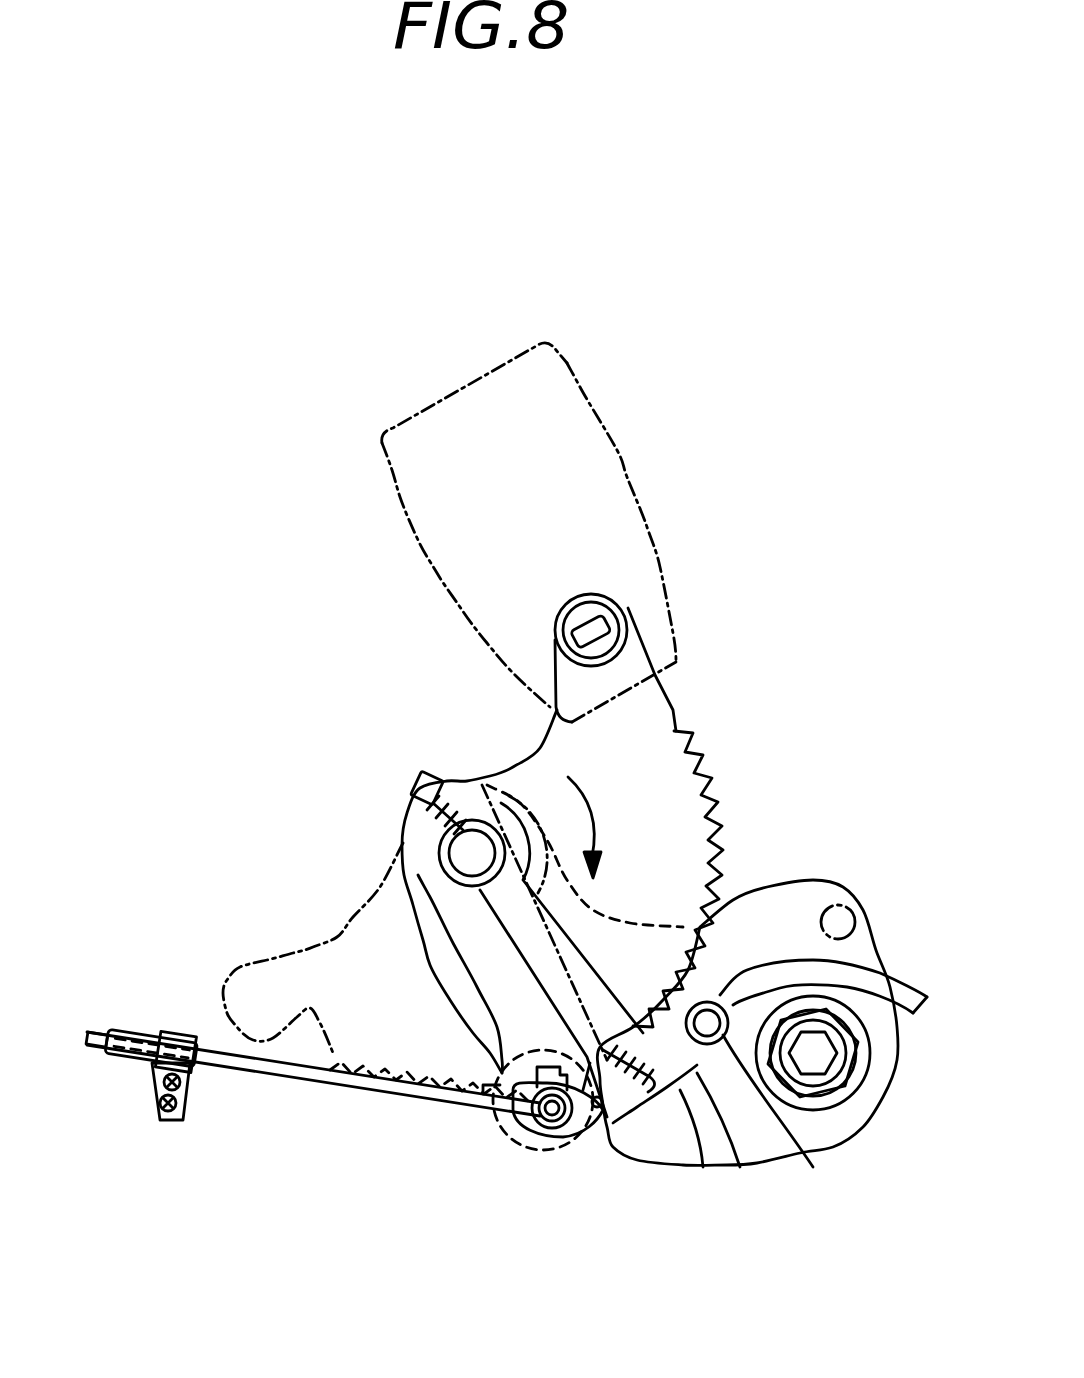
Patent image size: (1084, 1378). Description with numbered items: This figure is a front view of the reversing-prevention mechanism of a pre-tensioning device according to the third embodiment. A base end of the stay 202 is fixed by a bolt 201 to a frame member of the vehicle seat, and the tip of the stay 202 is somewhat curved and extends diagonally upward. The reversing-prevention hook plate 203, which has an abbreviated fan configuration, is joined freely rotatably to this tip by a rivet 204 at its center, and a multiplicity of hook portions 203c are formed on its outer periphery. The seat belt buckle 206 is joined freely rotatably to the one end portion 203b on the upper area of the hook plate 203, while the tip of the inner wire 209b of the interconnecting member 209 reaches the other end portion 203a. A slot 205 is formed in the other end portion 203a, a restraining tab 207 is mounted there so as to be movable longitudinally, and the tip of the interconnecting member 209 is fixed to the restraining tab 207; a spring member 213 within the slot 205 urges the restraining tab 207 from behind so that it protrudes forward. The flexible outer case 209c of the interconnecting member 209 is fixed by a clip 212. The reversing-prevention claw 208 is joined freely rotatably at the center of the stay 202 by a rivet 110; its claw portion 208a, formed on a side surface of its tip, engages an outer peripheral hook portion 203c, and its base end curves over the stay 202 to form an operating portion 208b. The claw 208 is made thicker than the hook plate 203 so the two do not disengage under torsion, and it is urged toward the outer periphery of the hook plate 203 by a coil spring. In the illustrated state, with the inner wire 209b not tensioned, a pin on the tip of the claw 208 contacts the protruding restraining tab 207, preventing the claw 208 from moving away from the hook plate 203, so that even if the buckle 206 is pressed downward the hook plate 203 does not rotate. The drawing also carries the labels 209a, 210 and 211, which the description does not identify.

The rivet 110 is at (787, 1115).
The bolt 201 is at (820, 1060).
The stay 202 is at (780, 897).
The reversing-prevention hook plate 203 is at (653, 720).
The other end portion 203a is at (240, 993).
The one end portion 203b is at (593, 630).
The hook portions 203c is at (710, 810).
The rivet 204 is at (465, 850).
The slot 205 is at (517, 1137).
The seat belt buckle 206 is at (438, 397).
The restraining tab 207 is at (587, 1130).
The reversing-prevention claw 208 is at (737, 1160).
The claw portion 208a is at (693, 1163).
The operating portion 208b is at (883, 980).
The interconnecting member 209 is at (293, 1083).
The cable end 209a is at (557, 1130).
The inner wire 209b is at (377, 1080).
The flexible outer case 209c is at (130, 1058).
The return spring 210 is at (487, 787).
The stopper pin 211 is at (690, 1040).
The clip 212 is at (190, 1100).
The spring member 213 is at (513, 1110).